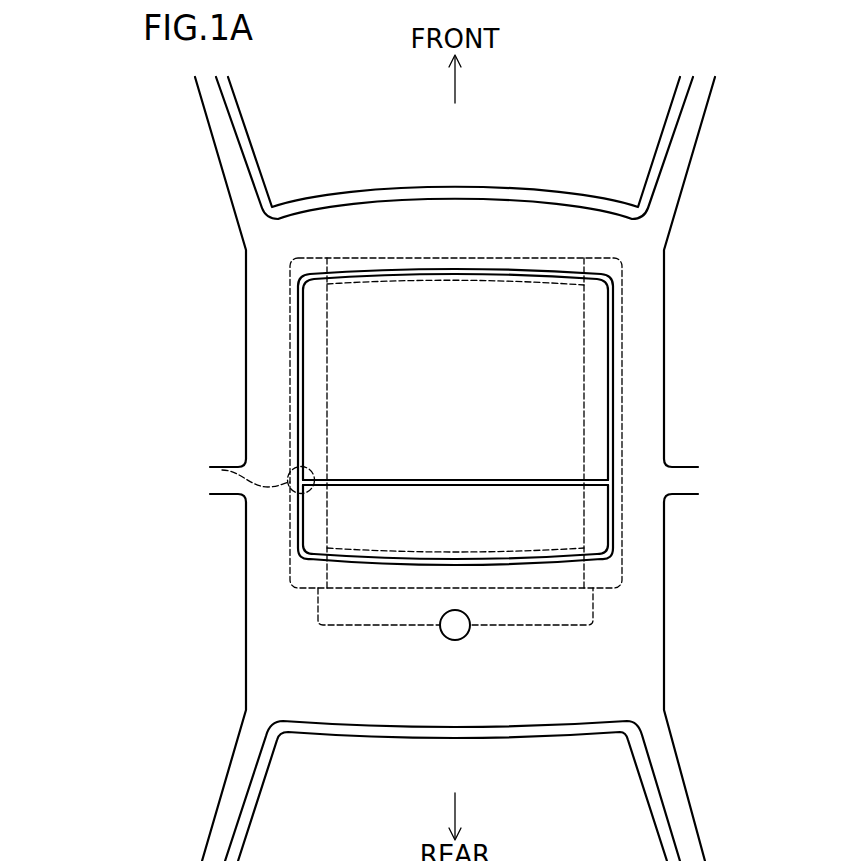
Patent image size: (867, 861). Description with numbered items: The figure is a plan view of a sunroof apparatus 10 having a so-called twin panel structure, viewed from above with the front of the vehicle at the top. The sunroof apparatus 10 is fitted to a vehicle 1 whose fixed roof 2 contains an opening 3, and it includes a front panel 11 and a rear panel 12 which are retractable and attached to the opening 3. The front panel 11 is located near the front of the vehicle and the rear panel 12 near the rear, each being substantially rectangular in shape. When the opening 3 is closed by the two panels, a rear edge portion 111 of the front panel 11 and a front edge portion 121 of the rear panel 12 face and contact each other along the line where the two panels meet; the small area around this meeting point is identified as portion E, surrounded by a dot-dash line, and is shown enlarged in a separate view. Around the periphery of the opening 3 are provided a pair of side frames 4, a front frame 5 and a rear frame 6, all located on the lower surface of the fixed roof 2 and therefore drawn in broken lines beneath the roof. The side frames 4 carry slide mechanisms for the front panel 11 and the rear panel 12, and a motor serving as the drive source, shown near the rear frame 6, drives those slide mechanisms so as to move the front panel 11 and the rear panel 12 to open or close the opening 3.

The vehicle 1 is at (205, 238).
The fixed roof 2 is at (358, 213).
The opening 3 is at (300, 338).
The side frames 4 is at (290, 375).
The front frame 5 is at (528, 257).
The rear frame 6 is at (375, 589).
The sunroof apparatus 10 is at (617, 365).
The front panel 11 is at (602, 318).
The rear panel 12 is at (598, 531).
The rear edge portion 111 is at (348, 478).
The front edge portion 121 is at (343, 487).
The portion E is at (212, 467).